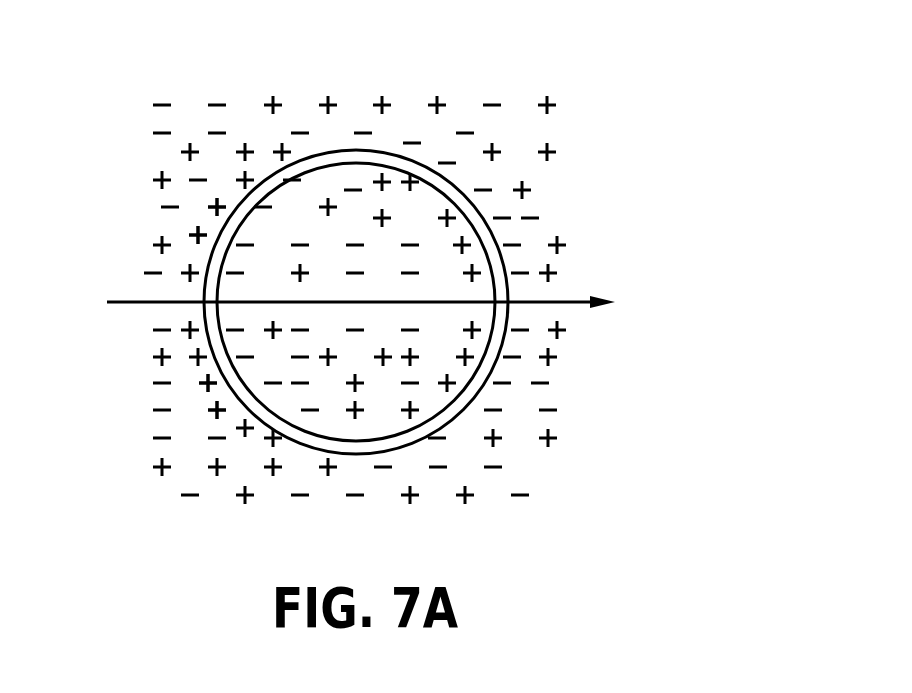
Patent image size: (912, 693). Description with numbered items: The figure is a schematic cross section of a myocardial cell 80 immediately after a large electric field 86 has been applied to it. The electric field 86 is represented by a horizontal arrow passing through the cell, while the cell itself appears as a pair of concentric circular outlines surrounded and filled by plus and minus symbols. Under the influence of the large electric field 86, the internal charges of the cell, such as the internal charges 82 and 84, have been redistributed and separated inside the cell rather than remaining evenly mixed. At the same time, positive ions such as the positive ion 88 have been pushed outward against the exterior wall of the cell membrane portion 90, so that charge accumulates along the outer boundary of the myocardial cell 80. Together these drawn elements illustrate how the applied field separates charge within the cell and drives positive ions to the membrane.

The myocardial cell 80 is at (603, 135).
The internal charge 82 is at (330, 177).
The internal charge 84 is at (390, 182).
The large electric field 86 is at (630, 322).
The positive ion 88 is at (192, 383).
The cell membrane portion 90 is at (210, 255).